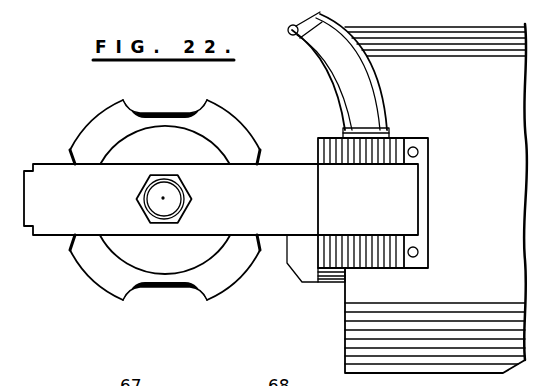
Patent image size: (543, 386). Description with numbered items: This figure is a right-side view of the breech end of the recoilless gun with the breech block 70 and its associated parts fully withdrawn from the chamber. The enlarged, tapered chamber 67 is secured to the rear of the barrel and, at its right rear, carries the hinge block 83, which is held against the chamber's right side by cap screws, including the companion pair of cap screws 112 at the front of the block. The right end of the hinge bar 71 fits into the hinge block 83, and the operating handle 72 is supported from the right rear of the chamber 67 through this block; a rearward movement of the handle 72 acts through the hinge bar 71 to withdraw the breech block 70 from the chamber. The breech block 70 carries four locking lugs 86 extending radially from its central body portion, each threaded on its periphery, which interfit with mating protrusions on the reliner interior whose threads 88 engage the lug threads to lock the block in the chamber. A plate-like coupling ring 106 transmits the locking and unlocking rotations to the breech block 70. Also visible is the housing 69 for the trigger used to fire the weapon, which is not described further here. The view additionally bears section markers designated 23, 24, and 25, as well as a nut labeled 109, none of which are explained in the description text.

The section line 23- 23 is at (297, 200).
The section line 24- 24 is at (362, 100).
The section line 25- 25 is at (344, 185).
The chamber 67 is at (352, 321).
The housing 69 is at (296, 279).
The breech block 70 is at (160, 118).
The hinge bar 71 is at (58, 170).
The operating handle 72 is at (308, 38).
The hinge block 83 is at (416, 139).
The locking lugs 86 is at (92, 134).
The threads 88 is at (100, 113).
The coupling ring 106 is at (131, 158).
The hex nut 109 is at (186, 206).
The cap screws 112 is at (418, 152).